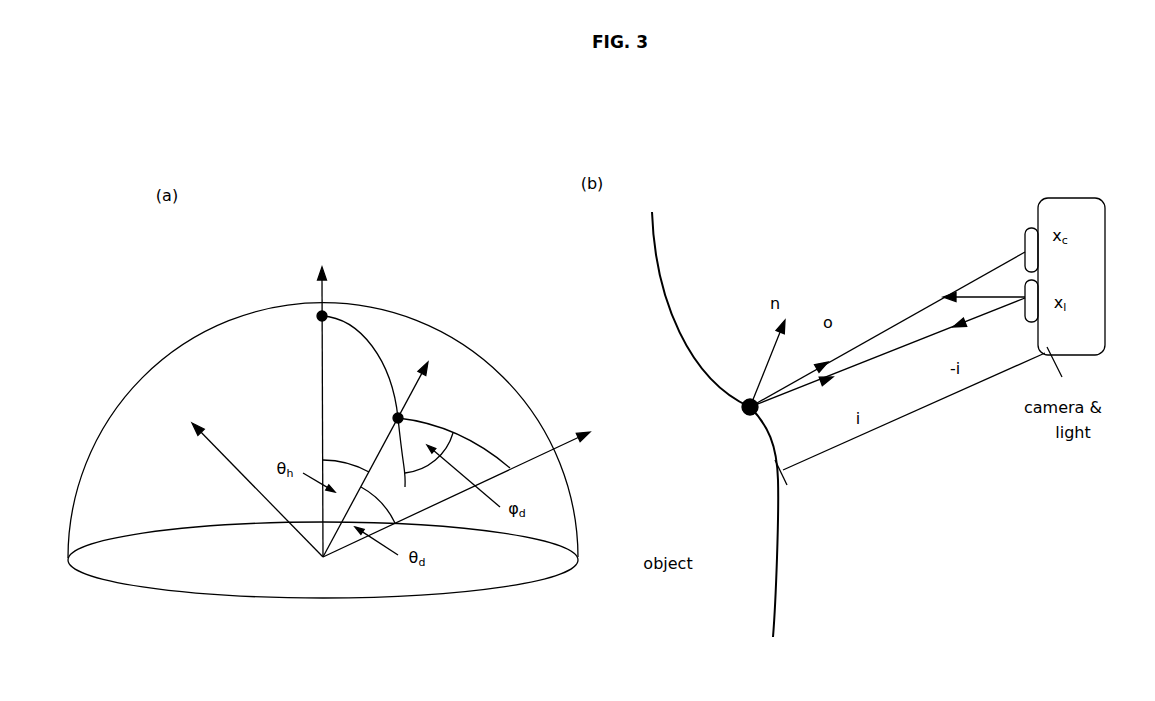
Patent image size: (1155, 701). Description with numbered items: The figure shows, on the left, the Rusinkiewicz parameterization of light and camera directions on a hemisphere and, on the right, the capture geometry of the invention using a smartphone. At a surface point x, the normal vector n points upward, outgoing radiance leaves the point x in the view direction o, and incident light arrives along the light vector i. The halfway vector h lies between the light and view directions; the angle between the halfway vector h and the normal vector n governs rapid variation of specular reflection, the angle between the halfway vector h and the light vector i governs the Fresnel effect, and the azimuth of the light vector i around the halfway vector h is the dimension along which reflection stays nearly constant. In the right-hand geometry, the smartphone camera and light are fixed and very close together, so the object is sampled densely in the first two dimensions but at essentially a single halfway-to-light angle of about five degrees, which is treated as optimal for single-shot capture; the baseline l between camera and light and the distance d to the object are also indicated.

The normal vector n is at (312, 399).
The view direction o is at (247, 485).
The halfway vector h is at (375, 449).
The light vector i is at (456, 477).
The point x is at (715, 424).
The camera-light baseline l is at (972, 286).
The distance to camera d is at (910, 419).